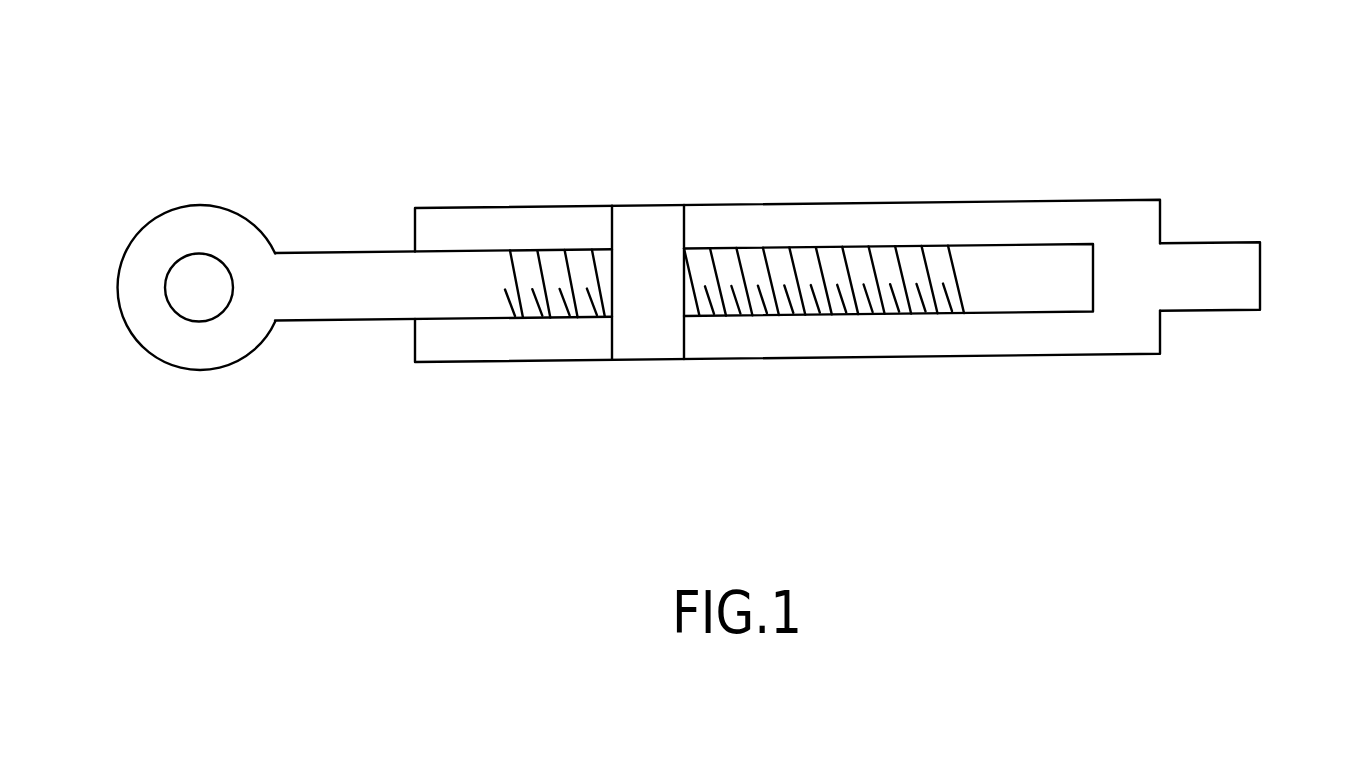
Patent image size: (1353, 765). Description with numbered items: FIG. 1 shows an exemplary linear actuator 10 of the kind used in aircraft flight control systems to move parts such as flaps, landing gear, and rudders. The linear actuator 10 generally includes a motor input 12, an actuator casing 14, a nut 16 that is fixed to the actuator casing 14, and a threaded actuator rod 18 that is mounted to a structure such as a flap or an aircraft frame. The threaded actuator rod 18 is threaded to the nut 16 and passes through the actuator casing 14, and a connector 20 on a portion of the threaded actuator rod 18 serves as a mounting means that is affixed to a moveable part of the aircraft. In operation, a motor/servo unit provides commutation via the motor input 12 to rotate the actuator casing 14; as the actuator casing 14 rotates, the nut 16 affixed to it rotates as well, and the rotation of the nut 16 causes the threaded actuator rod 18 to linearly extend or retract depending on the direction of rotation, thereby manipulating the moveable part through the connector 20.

The linear actuator 10 is at (1034, 96).
The motor input 12 is at (1268, 237).
The actuator casing 14 is at (962, 368).
The nut 16 is at (655, 218).
The threaded actuator rod 18 is at (350, 345).
The connector 20 is at (170, 192).